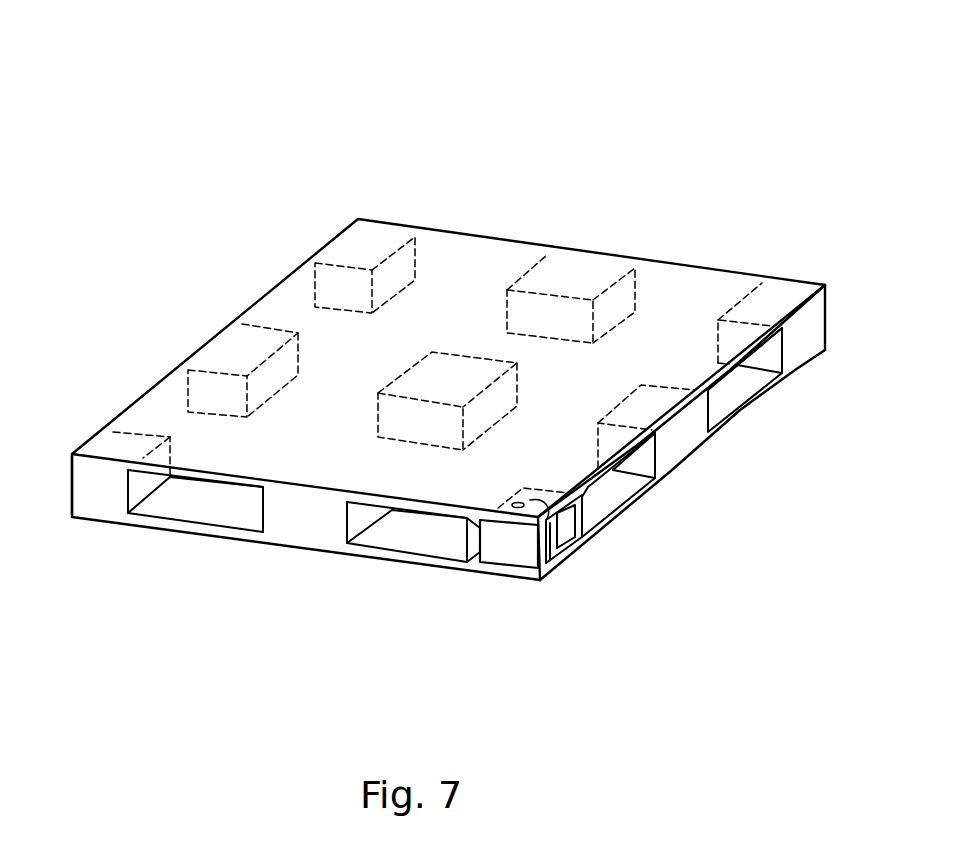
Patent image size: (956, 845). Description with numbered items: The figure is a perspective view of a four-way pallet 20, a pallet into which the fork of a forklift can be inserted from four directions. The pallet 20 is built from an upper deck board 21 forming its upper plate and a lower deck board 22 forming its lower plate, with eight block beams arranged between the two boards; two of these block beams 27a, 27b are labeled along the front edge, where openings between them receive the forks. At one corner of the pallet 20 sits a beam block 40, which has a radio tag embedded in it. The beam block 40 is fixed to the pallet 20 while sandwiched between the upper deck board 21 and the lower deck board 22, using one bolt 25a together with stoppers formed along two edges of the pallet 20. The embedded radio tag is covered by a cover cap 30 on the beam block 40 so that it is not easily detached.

The four-way pallet 20 is at (537, 133).
The upper deck board 21 is at (325, 342).
The lower deck board 22 is at (193, 535).
The block beam 27a is at (102, 495).
The block beam 27b is at (310, 525).
The beam block 40 is at (507, 553).
The bolt 25a is at (550, 528).
The cover cap 30 is at (563, 533).